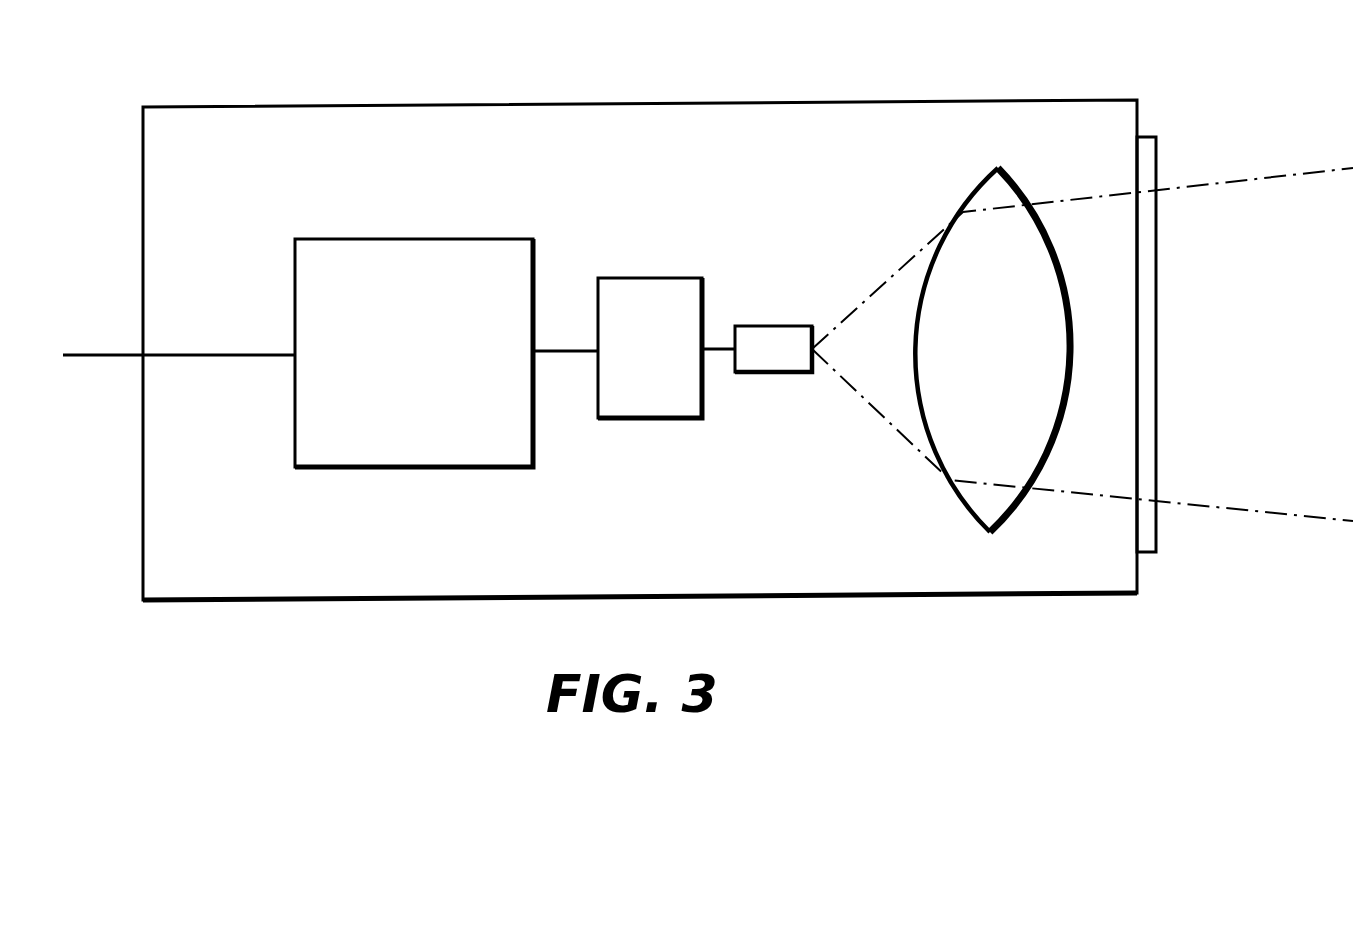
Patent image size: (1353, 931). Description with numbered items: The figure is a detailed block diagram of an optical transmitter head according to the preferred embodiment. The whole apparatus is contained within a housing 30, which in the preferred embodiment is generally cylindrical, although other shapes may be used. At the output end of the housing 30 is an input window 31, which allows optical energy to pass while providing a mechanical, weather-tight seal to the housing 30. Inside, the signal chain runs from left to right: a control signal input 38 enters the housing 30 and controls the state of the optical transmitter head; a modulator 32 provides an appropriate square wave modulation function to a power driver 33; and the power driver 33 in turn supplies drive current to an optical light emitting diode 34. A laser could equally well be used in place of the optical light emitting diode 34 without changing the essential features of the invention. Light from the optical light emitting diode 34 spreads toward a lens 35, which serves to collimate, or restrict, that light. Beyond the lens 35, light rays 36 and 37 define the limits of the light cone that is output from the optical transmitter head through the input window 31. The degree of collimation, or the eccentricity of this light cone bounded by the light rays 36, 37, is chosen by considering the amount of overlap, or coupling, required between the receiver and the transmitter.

The housing 30 is at (390, 104).
The input window 31 is at (1158, 150).
The modulator 32 is at (440, 238).
The power driver 33 is at (655, 278).
The optical light emitting diode 34 is at (775, 326).
The lens 35 is at (998, 168).
The light ray 36 is at (1335, 168).
The light ray 37 is at (1328, 520).
The control signal input 38 is at (102, 353).